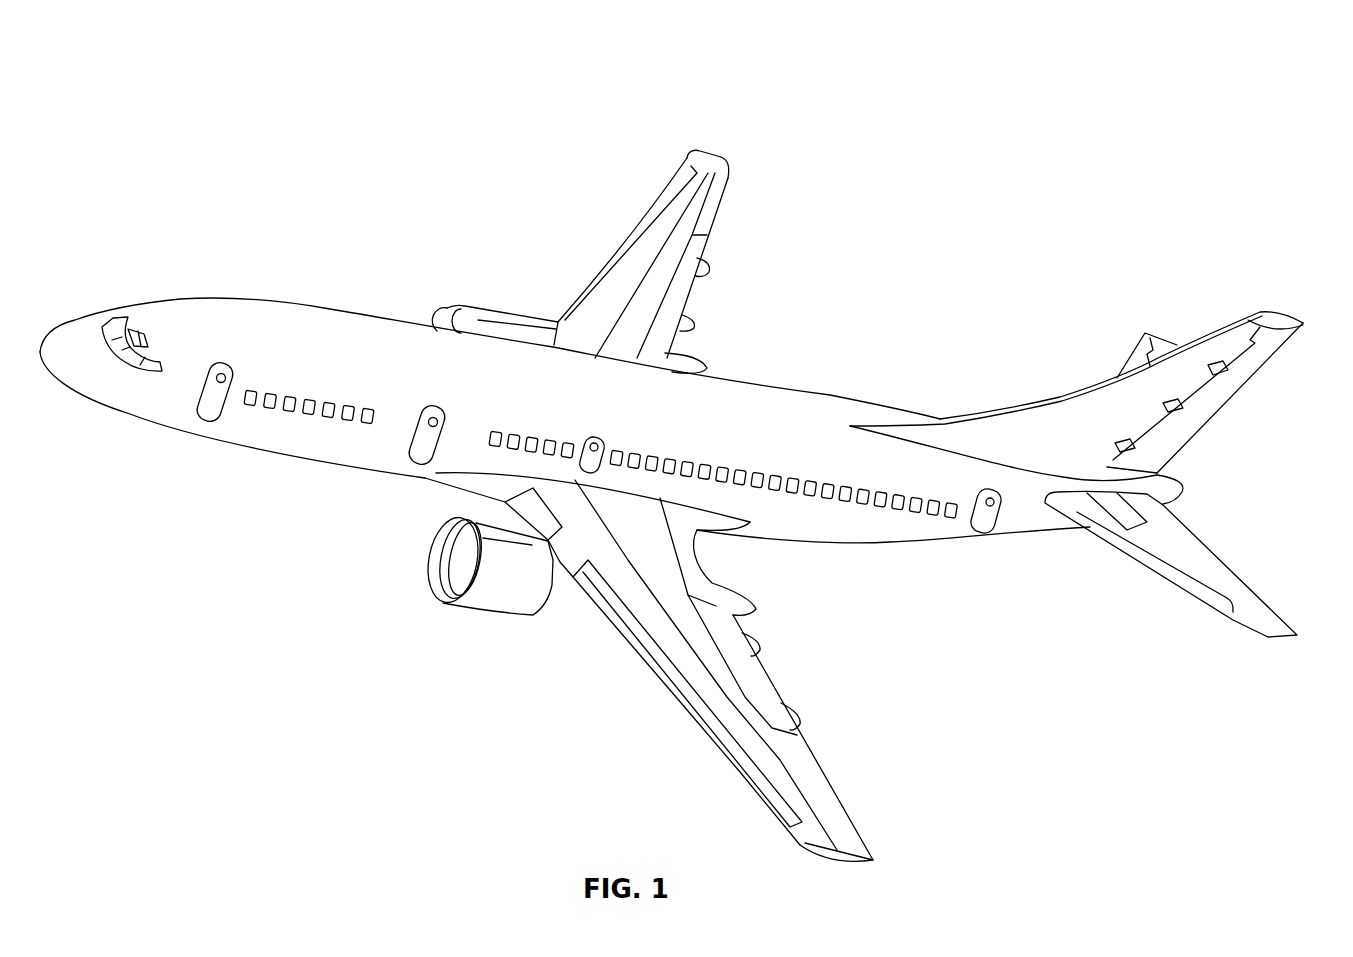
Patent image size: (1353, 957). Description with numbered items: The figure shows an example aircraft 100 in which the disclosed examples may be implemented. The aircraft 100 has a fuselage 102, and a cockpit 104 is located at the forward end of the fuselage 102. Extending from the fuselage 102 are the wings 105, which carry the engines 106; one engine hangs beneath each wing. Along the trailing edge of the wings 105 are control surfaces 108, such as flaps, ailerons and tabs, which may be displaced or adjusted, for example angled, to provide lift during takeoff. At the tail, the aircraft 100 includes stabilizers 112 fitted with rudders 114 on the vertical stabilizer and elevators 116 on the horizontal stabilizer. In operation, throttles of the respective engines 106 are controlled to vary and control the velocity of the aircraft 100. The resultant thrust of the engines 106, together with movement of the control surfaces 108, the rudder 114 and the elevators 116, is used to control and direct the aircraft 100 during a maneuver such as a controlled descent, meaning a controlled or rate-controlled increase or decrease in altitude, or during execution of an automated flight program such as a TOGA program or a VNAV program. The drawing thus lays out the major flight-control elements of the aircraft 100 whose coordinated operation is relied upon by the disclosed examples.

The aircraft 100 is at (186, 78).
The fuselage 102 is at (386, 300).
The cockpit 104 is at (158, 315).
The wings 105 is at (750, 188).
The engines 106 is at (510, 316).
The control surfaces 108 is at (673, 283).
The stabilizers 112 is at (1222, 290).
The rudders 114 is at (1243, 369).
The elevators 116 is at (1230, 583).